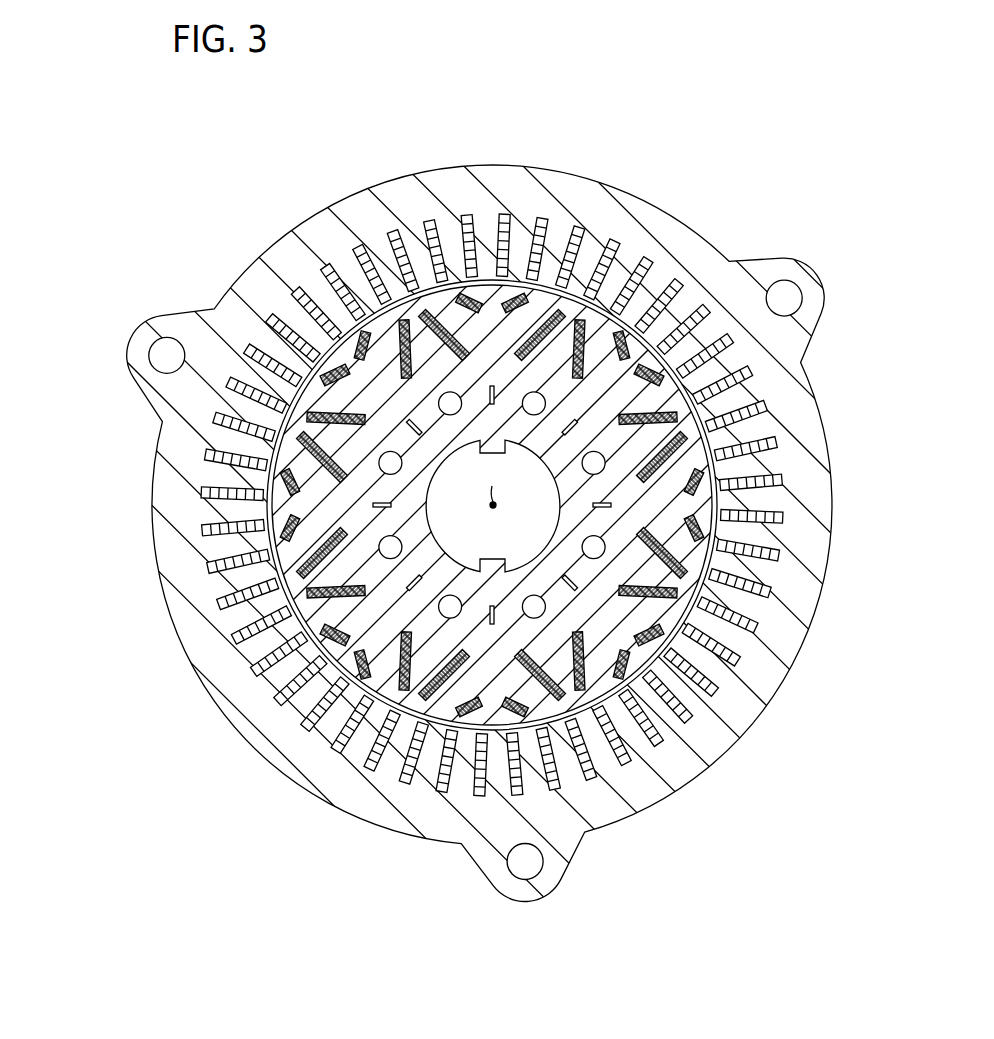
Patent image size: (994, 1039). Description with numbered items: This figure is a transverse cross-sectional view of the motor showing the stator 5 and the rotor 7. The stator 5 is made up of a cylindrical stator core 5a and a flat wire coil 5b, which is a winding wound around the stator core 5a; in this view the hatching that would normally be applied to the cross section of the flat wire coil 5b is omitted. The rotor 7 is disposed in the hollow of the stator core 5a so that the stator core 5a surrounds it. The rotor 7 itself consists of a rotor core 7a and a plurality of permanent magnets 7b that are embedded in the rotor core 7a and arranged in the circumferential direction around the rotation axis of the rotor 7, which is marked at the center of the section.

The stator 5 is at (497, 519).
The stator core 5a is at (643, 199).
The flat wire coil 5b is at (675, 280).
The rotor 7 is at (497, 519).
The rotor core 7a is at (325, 355).
The permanent magnets 7b is at (282, 432).